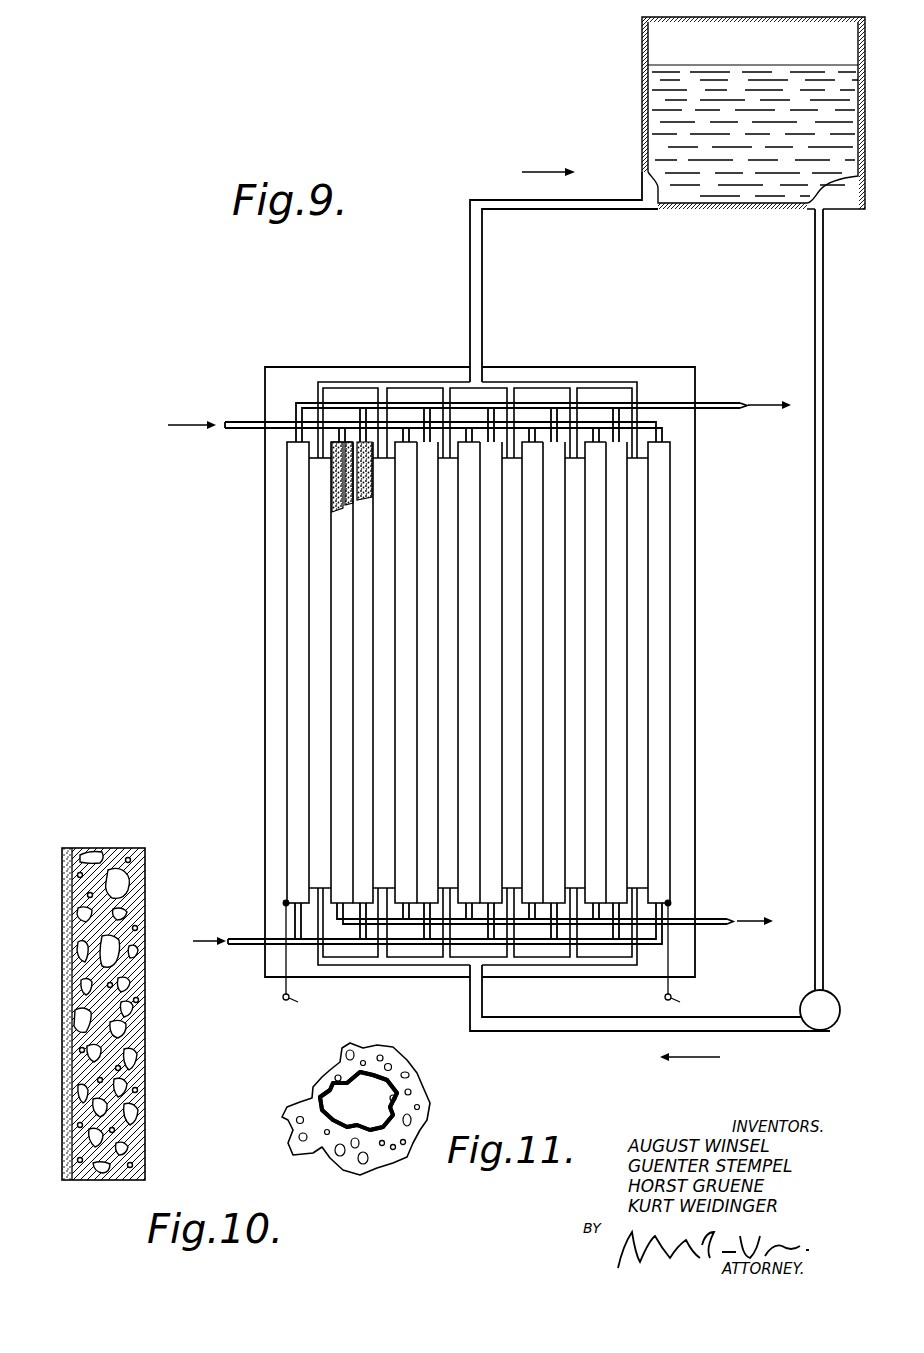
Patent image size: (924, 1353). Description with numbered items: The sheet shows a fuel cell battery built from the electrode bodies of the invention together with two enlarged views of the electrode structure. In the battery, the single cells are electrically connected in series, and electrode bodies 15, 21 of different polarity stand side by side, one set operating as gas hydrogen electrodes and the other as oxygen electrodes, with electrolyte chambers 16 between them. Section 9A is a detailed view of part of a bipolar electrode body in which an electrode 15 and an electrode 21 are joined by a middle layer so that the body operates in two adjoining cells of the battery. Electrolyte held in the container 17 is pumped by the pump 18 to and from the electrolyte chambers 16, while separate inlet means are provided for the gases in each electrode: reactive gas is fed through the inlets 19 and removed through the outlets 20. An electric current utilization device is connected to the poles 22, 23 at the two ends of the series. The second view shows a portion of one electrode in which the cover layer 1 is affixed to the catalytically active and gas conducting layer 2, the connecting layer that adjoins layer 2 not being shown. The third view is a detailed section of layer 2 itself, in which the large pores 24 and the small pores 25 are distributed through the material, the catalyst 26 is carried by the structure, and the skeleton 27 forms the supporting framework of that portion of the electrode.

In FIG. 9, the section of bipolar electrode body 9A is at (322, 485).
In FIG. 9, the electrode body 15 is at (296, 618).
In FIG. 9, the electrolyte chamber 16 is at (318, 780).
In FIG. 9, the electrolyte container 17 is at (847, 198).
In FIG. 9, the pump 18 is at (824, 1027).
In FIG. 9, the inlet 19 is at (415, 668).
In FIG. 9, the outlet 20 is at (543, 651).
In FIG. 9, the electrode body 21 is at (335, 677).
In FIG. 9, the pole 22 is at (305, 958).
In FIG. 9, the pole 23 is at (688, 958).
In FIG. 10, the cover layer 1 is at (63, 1182).
In FIG. 10, the catalytically active and gas conducting layer 2 is at (142, 1188).
In FIG. 11, the large pores 24 is at (350, 1113).
In FIG. 11, the small pores 25 is at (382, 1146).
In FIG. 11, the catalyst 26 is at (397, 1102).
In FIG. 11, the skeleton 27 is at (283, 1125).